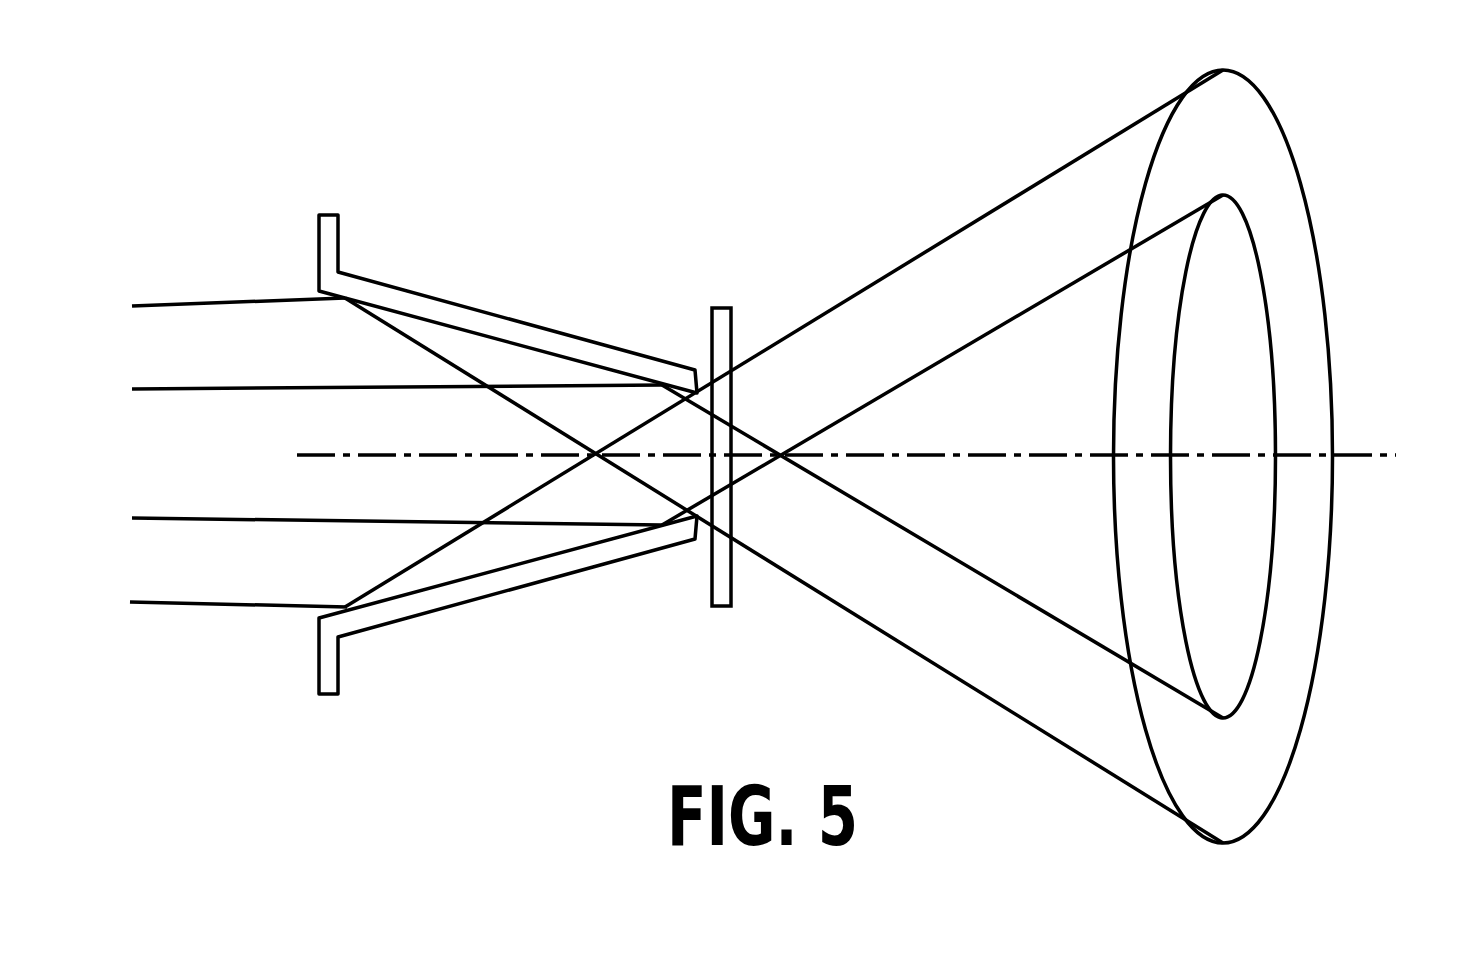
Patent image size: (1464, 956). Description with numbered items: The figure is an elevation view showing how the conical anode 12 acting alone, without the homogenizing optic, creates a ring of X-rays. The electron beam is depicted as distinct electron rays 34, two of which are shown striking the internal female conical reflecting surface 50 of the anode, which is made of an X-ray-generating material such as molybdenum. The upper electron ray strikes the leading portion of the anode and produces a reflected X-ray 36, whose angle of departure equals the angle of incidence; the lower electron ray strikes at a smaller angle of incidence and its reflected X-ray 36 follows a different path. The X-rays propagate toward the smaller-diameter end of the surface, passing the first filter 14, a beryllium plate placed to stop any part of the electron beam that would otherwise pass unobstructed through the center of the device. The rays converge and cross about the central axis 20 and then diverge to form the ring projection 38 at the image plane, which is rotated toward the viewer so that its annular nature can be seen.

The conical anode 12 is at (508, 300).
The first filter 14 is at (761, 407).
The optical axis 20 is at (880, 411).
The electron rays 34 is at (396, 370).
The reflected X-ray 36 is at (784, 456).
The ring projection 38 is at (1250, 438).
The female conical reflecting surface 50 is at (508, 609).